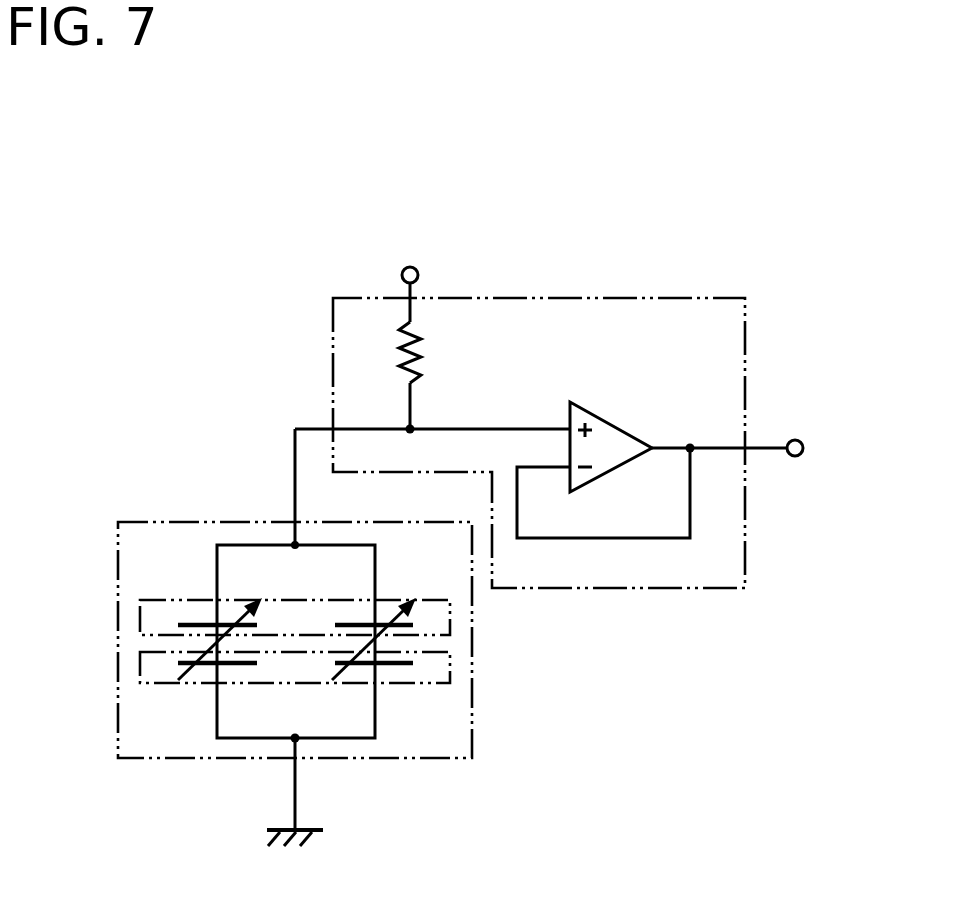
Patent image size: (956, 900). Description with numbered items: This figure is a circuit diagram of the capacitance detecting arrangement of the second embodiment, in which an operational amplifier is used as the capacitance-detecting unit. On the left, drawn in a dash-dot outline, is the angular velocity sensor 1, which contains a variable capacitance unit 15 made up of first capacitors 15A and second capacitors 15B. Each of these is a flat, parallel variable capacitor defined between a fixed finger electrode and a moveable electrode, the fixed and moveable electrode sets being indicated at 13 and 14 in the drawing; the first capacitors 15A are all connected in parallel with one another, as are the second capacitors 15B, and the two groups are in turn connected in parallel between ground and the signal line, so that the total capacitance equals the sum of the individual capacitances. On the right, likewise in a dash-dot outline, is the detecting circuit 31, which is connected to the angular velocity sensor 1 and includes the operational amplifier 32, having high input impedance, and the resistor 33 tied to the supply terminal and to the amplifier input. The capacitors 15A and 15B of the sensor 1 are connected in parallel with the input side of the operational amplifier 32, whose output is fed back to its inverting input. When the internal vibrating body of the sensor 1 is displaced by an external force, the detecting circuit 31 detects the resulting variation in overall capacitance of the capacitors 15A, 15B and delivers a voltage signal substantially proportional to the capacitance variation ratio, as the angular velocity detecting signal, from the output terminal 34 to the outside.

The angular velocity sensor 1 is at (146, 516).
The first electrode 13 is at (156, 600).
The second electrode 14 is at (165, 685).
The variable capacitance unit 15 is at (138, 760).
The first capacitor 15A is at (190, 624).
The second capacitor 15B is at (413, 664).
The detecting circuit 31 is at (646, 284).
The operational amplifier 32 is at (626, 436).
The resistor 33 is at (423, 352).
The output terminal 34 is at (800, 441).